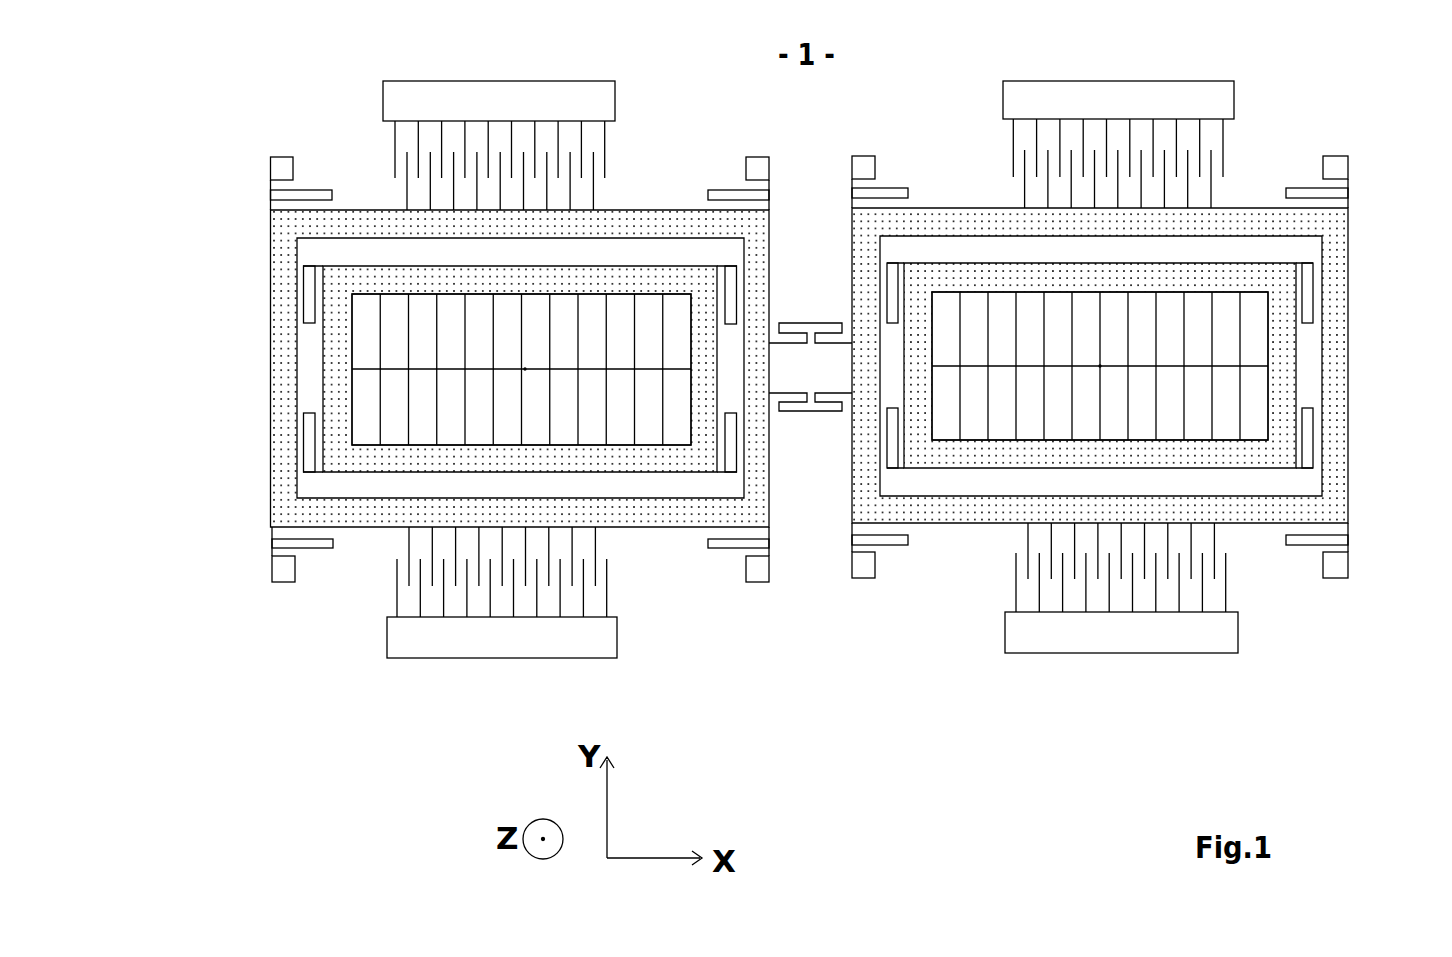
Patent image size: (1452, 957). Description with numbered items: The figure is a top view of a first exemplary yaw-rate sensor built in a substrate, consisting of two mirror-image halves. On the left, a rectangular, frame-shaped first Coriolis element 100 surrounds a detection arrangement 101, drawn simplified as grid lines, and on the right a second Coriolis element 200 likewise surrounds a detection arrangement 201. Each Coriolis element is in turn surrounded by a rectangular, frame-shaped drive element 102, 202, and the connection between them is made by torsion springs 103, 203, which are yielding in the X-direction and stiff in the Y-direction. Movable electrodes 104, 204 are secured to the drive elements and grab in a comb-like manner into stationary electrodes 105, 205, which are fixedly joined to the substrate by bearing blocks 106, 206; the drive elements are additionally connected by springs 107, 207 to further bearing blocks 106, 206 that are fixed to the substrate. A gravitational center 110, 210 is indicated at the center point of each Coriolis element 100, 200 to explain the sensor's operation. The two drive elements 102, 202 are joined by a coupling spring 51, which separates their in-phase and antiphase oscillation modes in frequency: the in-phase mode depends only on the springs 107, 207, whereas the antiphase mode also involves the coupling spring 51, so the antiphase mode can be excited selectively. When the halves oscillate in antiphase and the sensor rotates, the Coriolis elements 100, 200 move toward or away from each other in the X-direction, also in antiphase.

The coupling spring 51 is at (810, 527).
The first Coriolis element 100 is at (430, 369).
The detection arrangement 101 is at (438, 369).
The drive element 102 is at (469, 368).
The torsion springs 103 is at (428, 376).
The movable electrodes 104 is at (487, 375).
The stationary electrodes 105 is at (423, 138).
The bearing blocks 106 is at (476, 383).
The springs 107 is at (447, 357).
The gravitational center 110 is at (613, 477).
The second Coriolis element 200 is at (1187, 366).
The detection arrangement 201 is at (1157, 365).
The drive element 202 is at (1148, 368).
The torsion springs 203 is at (1164, 375).
The movable electrodes 204 is at (1170, 165).
The stationary electrodes 205 is at (1128, 371).
The bearing blocks 206 is at (1099, 381).
The springs 207 is at (1142, 445).
The gravitational center 210 is at (1013, 257).